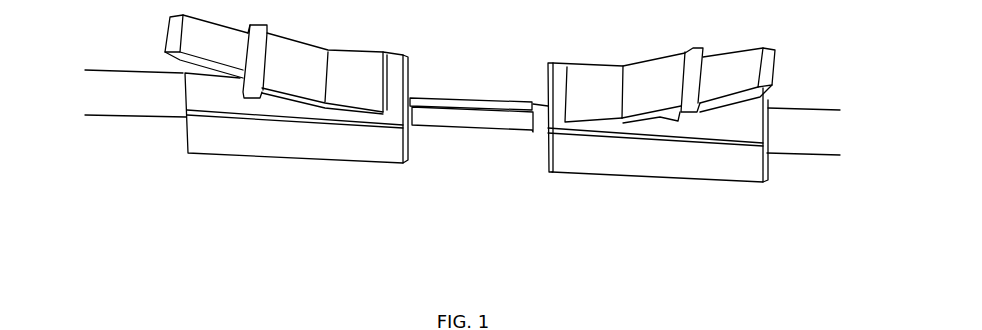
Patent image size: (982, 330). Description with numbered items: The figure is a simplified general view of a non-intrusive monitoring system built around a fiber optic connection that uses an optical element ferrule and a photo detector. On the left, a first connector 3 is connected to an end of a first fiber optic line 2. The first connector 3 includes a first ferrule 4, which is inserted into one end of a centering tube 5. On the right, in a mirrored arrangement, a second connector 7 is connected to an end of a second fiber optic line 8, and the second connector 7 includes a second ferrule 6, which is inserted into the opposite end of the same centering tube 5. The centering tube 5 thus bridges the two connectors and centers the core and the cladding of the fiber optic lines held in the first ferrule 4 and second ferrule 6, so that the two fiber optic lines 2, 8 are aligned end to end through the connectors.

The first fiber optic line 2 is at (138, 90).
The first connector 3 is at (250, 130).
The first ferrule 4 is at (408, 125).
The centering tube 5 is at (477, 117).
The second ferrule 6 is at (533, 128).
The second connector 7 is at (650, 163).
The second fiber optic line 8 is at (798, 132).